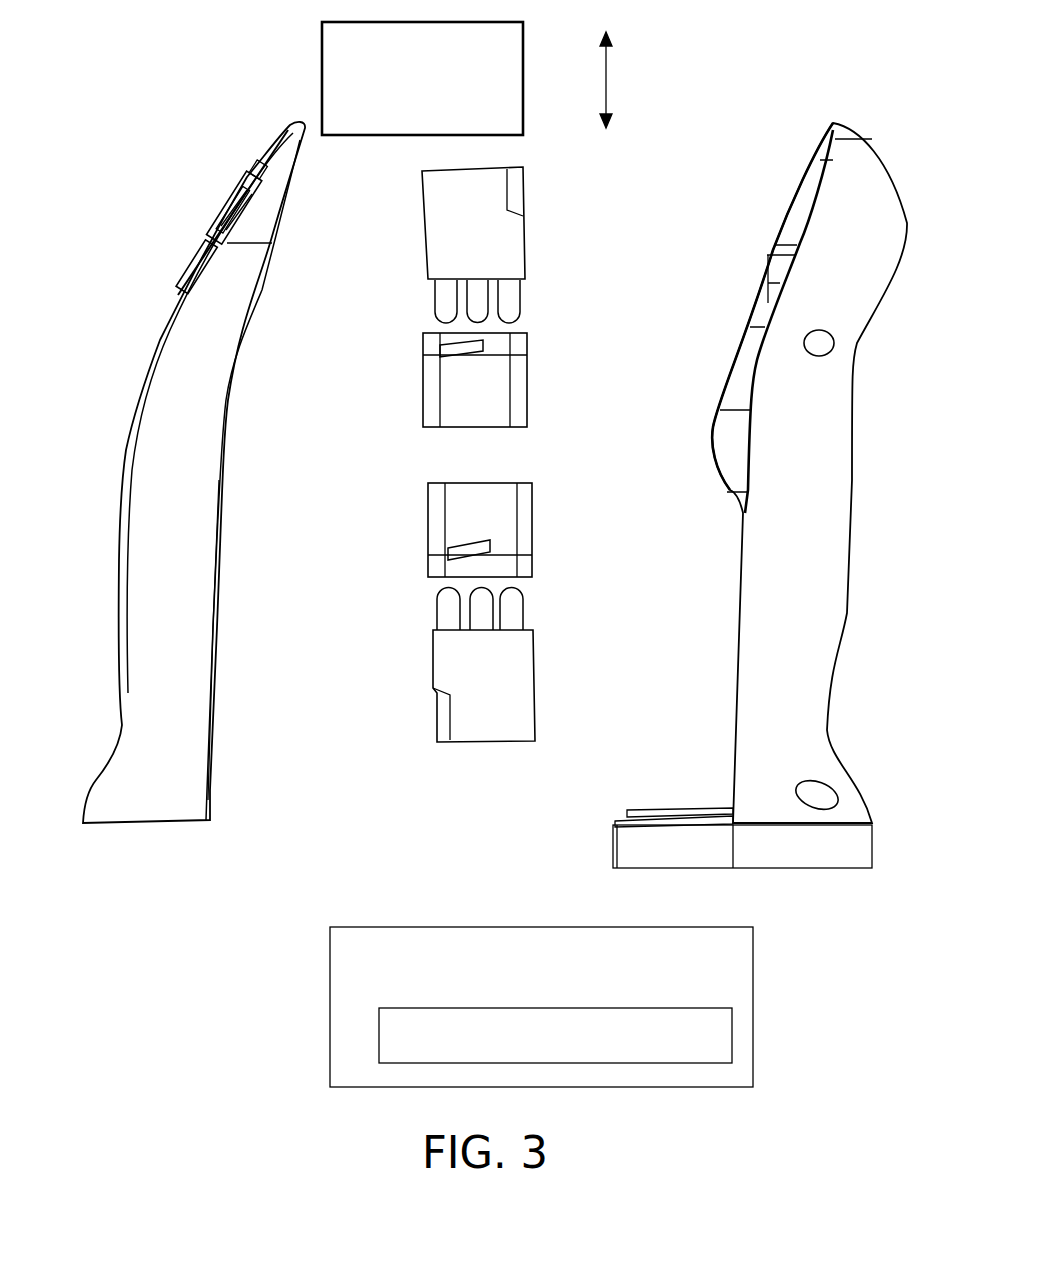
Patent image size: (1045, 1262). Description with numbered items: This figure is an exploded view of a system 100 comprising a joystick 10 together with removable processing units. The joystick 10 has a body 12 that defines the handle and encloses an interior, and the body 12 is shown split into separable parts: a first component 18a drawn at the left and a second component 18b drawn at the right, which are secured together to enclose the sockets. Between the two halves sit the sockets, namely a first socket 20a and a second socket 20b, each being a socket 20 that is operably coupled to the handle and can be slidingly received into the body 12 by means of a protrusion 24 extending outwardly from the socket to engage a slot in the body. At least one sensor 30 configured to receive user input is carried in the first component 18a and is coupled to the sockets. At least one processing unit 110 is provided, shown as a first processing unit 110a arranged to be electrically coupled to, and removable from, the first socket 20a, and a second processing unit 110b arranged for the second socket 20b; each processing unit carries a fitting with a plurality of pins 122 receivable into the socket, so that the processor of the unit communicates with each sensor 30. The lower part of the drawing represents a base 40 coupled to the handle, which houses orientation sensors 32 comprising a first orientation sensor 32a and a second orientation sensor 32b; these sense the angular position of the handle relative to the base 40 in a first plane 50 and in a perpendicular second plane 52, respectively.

The system 100 is at (112, 162).
The joystick 10 is at (115, 389).
The body 12 is at (818, 645).
The first component 18a is at (213, 388).
The second component 18b is at (838, 512).
The socket 20 is at (437, 515).
The first socket 20a is at (502, 407).
The second socket 20b is at (505, 522).
The protrusion 24 is at (463, 353).
The sensor 30 is at (210, 214).
The orientation sensor 32 is at (555, 1035).
The first orientation sensor 32a is at (555, 1035).
The second orientation sensor 32b is at (555, 1035).
The base 40 is at (541, 1007).
The first plane 50 is at (606, 77).
The second plane 52 is at (523, 123).
The processing unit 110 is at (447, 230).
The first processing unit 110a is at (502, 232).
The second processing unit 110b is at (517, 670).
The pins 122 is at (447, 300).